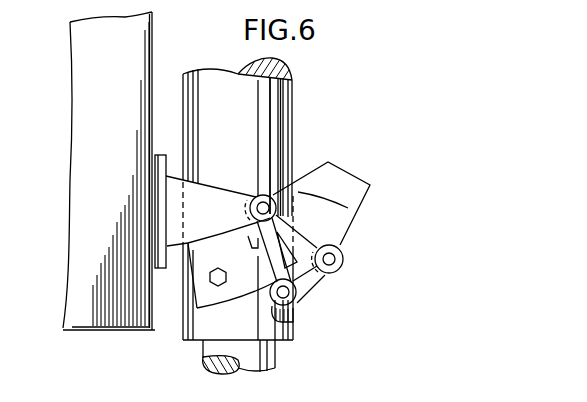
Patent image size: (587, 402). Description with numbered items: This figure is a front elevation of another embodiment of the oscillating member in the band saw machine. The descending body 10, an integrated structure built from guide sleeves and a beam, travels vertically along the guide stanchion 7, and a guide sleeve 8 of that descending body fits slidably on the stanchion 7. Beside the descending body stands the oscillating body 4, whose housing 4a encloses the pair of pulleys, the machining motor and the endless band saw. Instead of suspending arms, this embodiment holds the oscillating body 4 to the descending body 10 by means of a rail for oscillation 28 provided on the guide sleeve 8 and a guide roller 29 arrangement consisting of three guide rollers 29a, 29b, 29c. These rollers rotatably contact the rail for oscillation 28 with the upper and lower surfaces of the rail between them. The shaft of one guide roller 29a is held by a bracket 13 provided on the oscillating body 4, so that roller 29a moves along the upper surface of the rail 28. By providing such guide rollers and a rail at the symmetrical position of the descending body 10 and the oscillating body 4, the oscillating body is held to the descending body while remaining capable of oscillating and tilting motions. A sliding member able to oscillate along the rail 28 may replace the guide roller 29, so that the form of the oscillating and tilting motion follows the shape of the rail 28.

The oscillating body 4 is at (160, 78).
The housing 4a is at (83, 85).
The bracket 13 is at (180, 172).
The descending body 10 is at (301, 108).
The guide sleeve 8 is at (280, 162).
The rail for oscillation 28 is at (338, 170).
The guide roller 29 is at (357, 258).
The guide roller 29a is at (347, 217).
The guide roller 29b is at (345, 258).
The guide roller 29c is at (298, 312).
The guide stanchion 7 is at (276, 355).